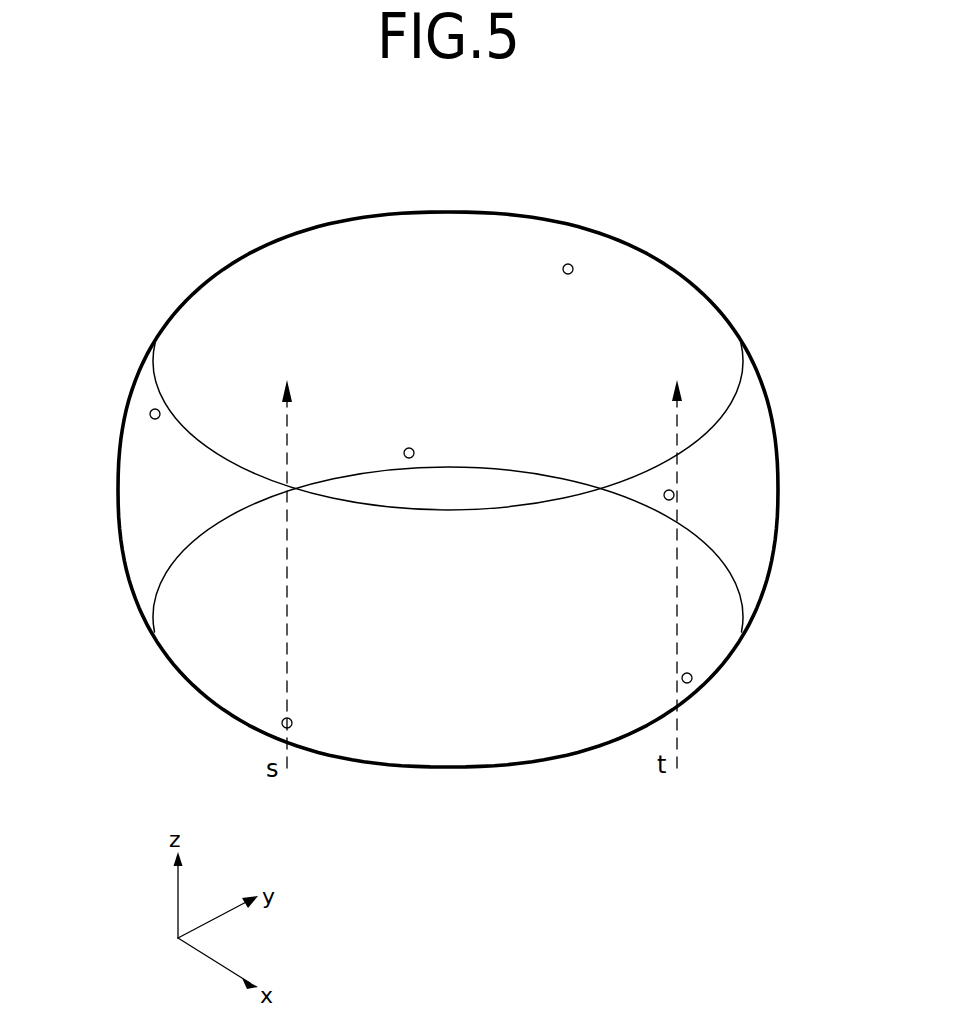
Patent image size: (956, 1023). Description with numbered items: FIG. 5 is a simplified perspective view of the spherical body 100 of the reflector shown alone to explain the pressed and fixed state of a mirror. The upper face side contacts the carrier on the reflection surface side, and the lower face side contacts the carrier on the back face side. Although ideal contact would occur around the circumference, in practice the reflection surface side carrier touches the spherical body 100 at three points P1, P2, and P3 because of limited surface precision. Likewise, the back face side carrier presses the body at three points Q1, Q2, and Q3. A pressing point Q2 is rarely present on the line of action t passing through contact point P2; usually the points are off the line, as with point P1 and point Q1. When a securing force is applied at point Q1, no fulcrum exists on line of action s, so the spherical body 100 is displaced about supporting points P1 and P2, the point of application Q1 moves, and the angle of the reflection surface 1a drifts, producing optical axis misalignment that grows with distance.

The spherical body 100 is at (742, 538).
The reflection surface 1a is at (258, 282).
The contact point P1 is at (150, 414).
The contact point P2 is at (675, 495).
The contact point P3 is at (573, 267).
The pressing point Q1 is at (282, 723).
The pressing point Q2 is at (693, 681).
The pressing point Q3 is at (409, 448).